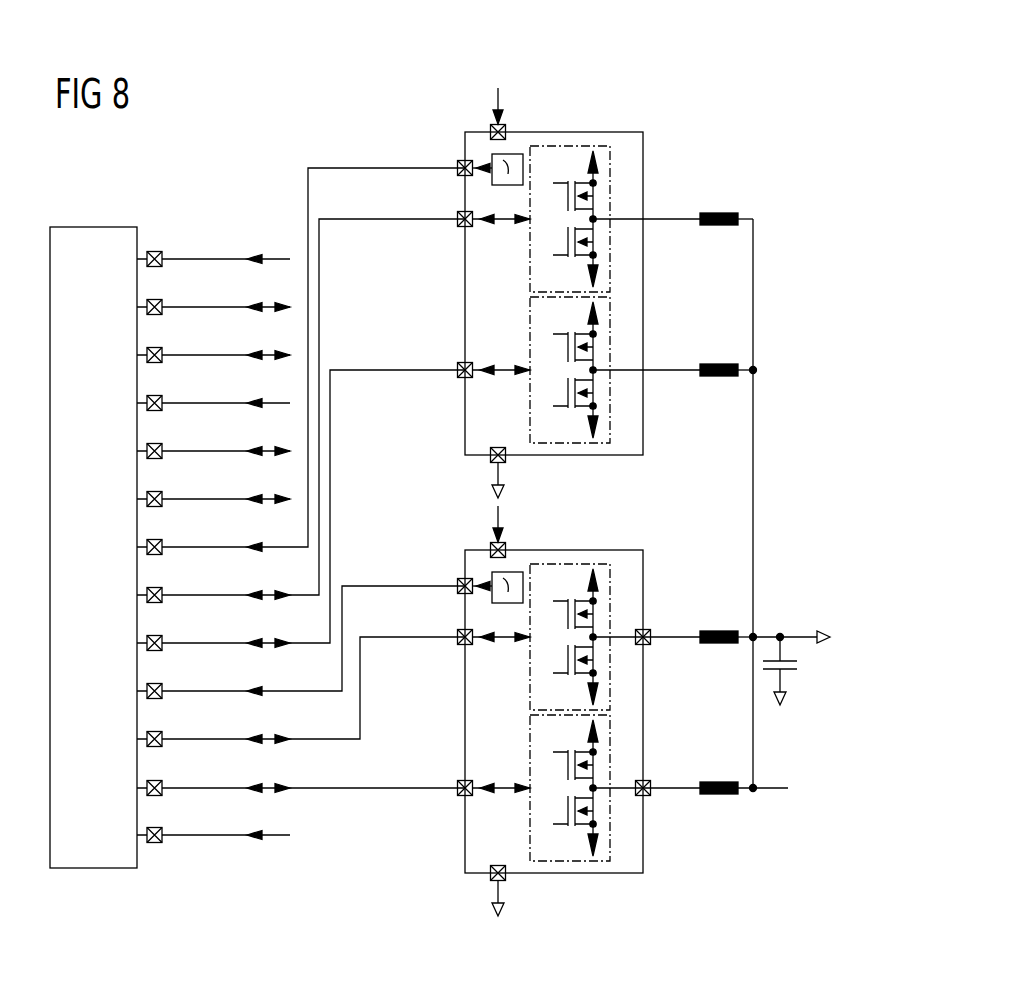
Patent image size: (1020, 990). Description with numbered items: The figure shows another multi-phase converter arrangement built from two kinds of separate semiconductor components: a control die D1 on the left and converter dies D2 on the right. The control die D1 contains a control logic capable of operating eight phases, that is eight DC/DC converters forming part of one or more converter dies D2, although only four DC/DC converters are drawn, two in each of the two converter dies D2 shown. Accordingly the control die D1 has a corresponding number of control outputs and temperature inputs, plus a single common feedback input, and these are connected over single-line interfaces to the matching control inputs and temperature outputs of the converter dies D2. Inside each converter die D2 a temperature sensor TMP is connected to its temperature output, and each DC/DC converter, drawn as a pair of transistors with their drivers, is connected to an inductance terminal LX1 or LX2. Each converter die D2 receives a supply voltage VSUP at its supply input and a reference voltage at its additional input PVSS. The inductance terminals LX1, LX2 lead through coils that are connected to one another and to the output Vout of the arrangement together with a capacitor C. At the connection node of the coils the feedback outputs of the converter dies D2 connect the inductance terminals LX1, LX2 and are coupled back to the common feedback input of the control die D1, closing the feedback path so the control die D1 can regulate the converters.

The control die D1 is at (92, 227).
The converter die D2 is at (459, 171).
The inductance terminal LX1 is at (706, 418).
The inductance terminal LX2 is at (724, 569).
The capacitor C is at (790, 673).
The output Vout is at (794, 624).
The temperature sensor TMP is at (502, 392).
The supply voltage VSUP is at (527, 315).
The reference voltage input PVSS is at (525, 689).